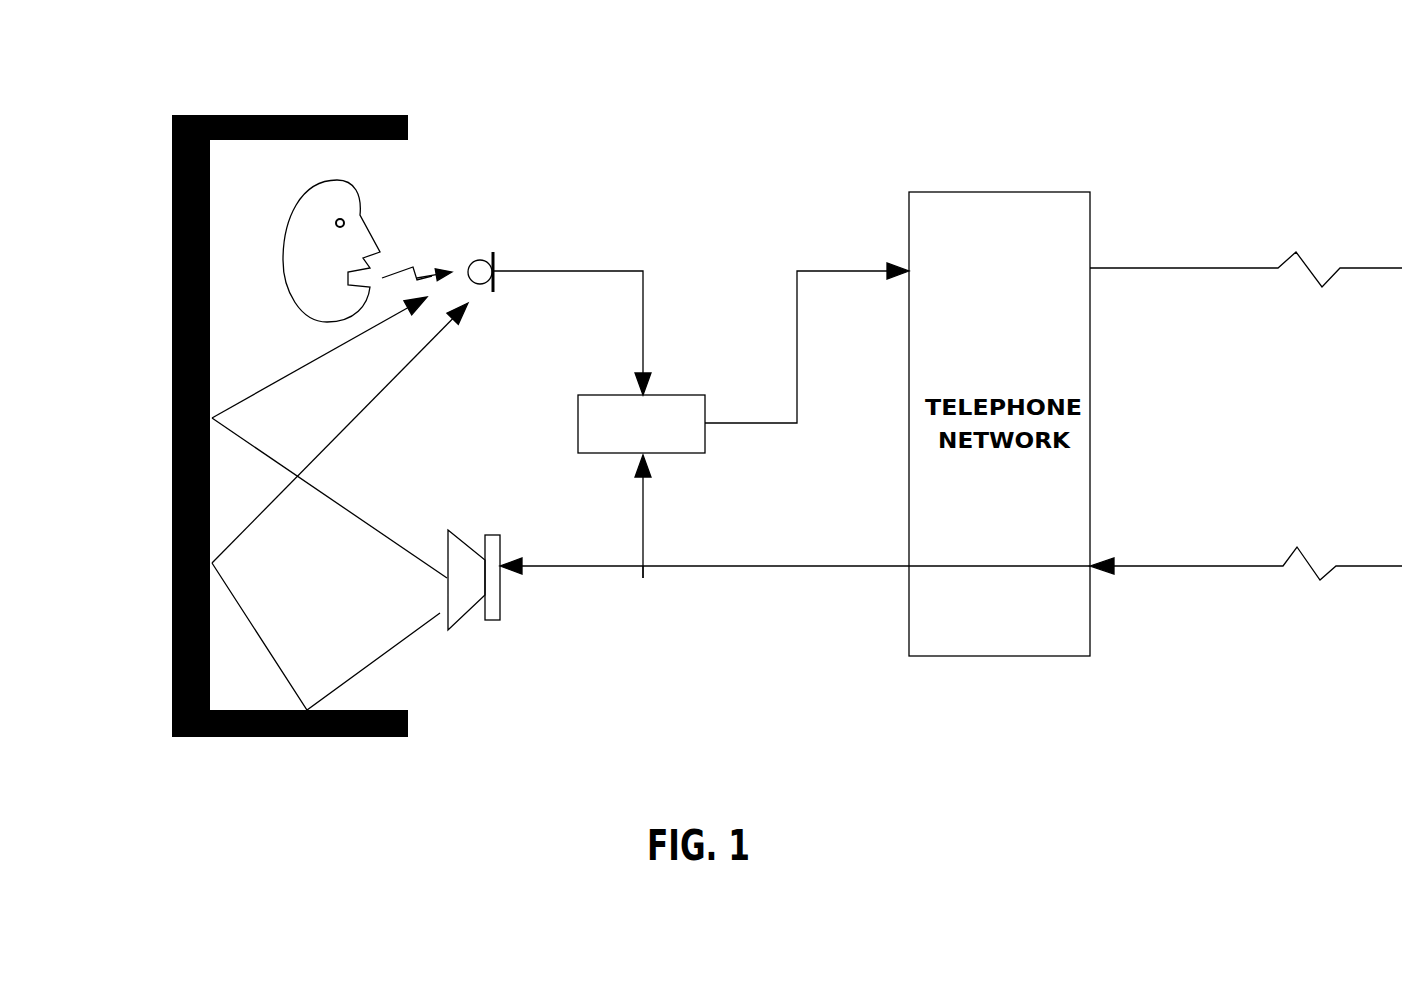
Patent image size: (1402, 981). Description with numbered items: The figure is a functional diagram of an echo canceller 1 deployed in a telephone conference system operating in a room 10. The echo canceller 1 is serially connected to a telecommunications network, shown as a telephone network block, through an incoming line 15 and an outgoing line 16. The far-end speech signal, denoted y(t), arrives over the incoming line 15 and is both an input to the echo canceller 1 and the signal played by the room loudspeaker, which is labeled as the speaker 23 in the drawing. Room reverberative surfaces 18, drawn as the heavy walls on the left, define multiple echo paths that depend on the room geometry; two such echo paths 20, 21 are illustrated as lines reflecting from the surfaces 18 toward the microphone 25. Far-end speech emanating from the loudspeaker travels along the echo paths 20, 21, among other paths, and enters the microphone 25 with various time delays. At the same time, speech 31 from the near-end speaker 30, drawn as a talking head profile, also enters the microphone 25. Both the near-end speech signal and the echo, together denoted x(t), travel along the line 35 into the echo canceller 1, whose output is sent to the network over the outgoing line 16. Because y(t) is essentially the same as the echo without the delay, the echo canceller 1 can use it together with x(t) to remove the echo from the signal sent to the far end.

The room 10 is at (265, 183).
The room reverberative surfaces 18 is at (210, 243).
The near-end speaker 30 is at (362, 208).
The speech 31 is at (390, 270).
The microphone 25 is at (498, 268).
The line 35 is at (645, 357).
The echo canceller 1 is at (578, 437).
The echo path 21 is at (343, 345).
The echo path 20 is at (387, 645).
The speaker 23 is at (467, 617).
The outgoing line 16 is at (1102, 268).
The incoming line 15 is at (1205, 567).